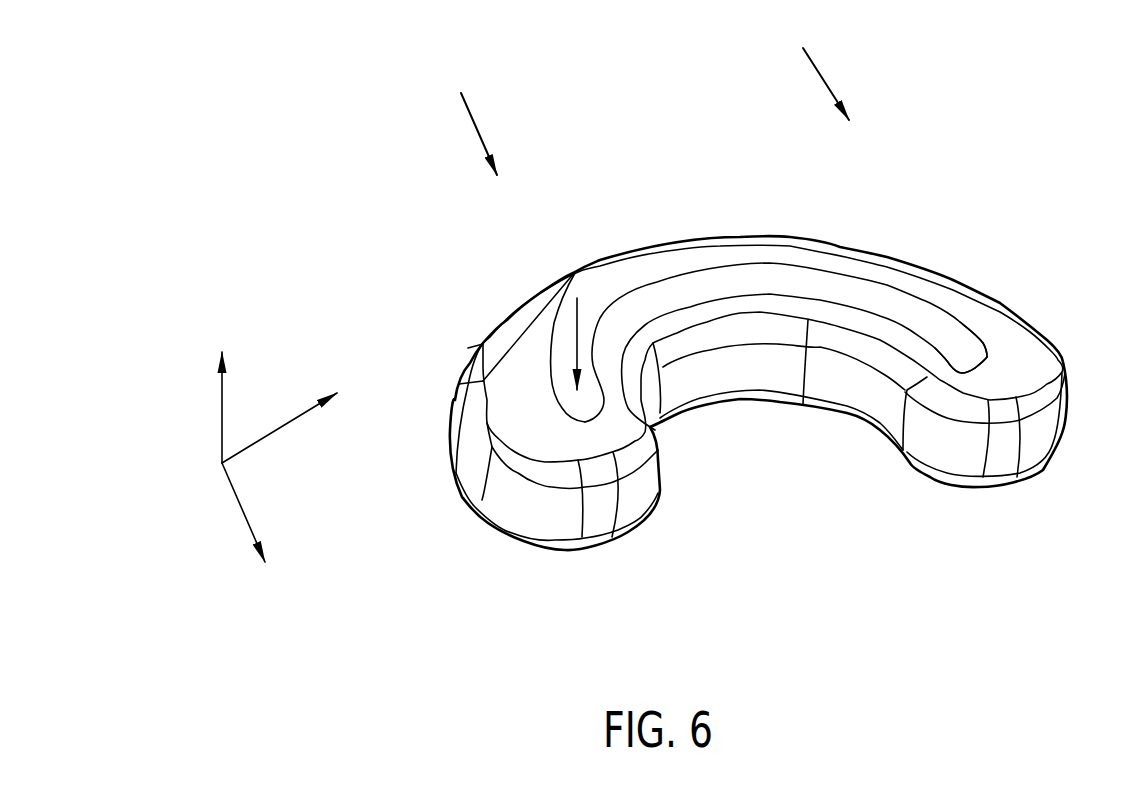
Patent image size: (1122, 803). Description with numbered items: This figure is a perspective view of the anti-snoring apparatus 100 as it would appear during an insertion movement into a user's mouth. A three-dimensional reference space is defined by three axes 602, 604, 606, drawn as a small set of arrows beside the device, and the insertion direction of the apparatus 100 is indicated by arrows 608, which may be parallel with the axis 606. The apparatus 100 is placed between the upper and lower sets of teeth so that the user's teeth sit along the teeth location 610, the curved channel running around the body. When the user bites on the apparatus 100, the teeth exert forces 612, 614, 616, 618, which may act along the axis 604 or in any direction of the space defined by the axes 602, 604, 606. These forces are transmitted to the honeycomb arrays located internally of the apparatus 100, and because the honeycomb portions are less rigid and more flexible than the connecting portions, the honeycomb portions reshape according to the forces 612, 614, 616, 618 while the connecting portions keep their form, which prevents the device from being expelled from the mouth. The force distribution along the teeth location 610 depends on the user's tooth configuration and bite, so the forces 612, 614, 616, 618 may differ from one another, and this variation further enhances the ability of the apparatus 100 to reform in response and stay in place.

The anti-snoring apparatus 100 is at (977, 128).
The axis 602 is at (258, 440).
The axis 604 is at (222, 402).
The axis 606 is at (248, 540).
The arrows 608 is at (822, 77).
The teeth location 610 is at (575, 420).
The force 612 is at (578, 347).
The force 614 is at (645, 296).
The force 616 is at (786, 278).
The force 618 is at (947, 332).